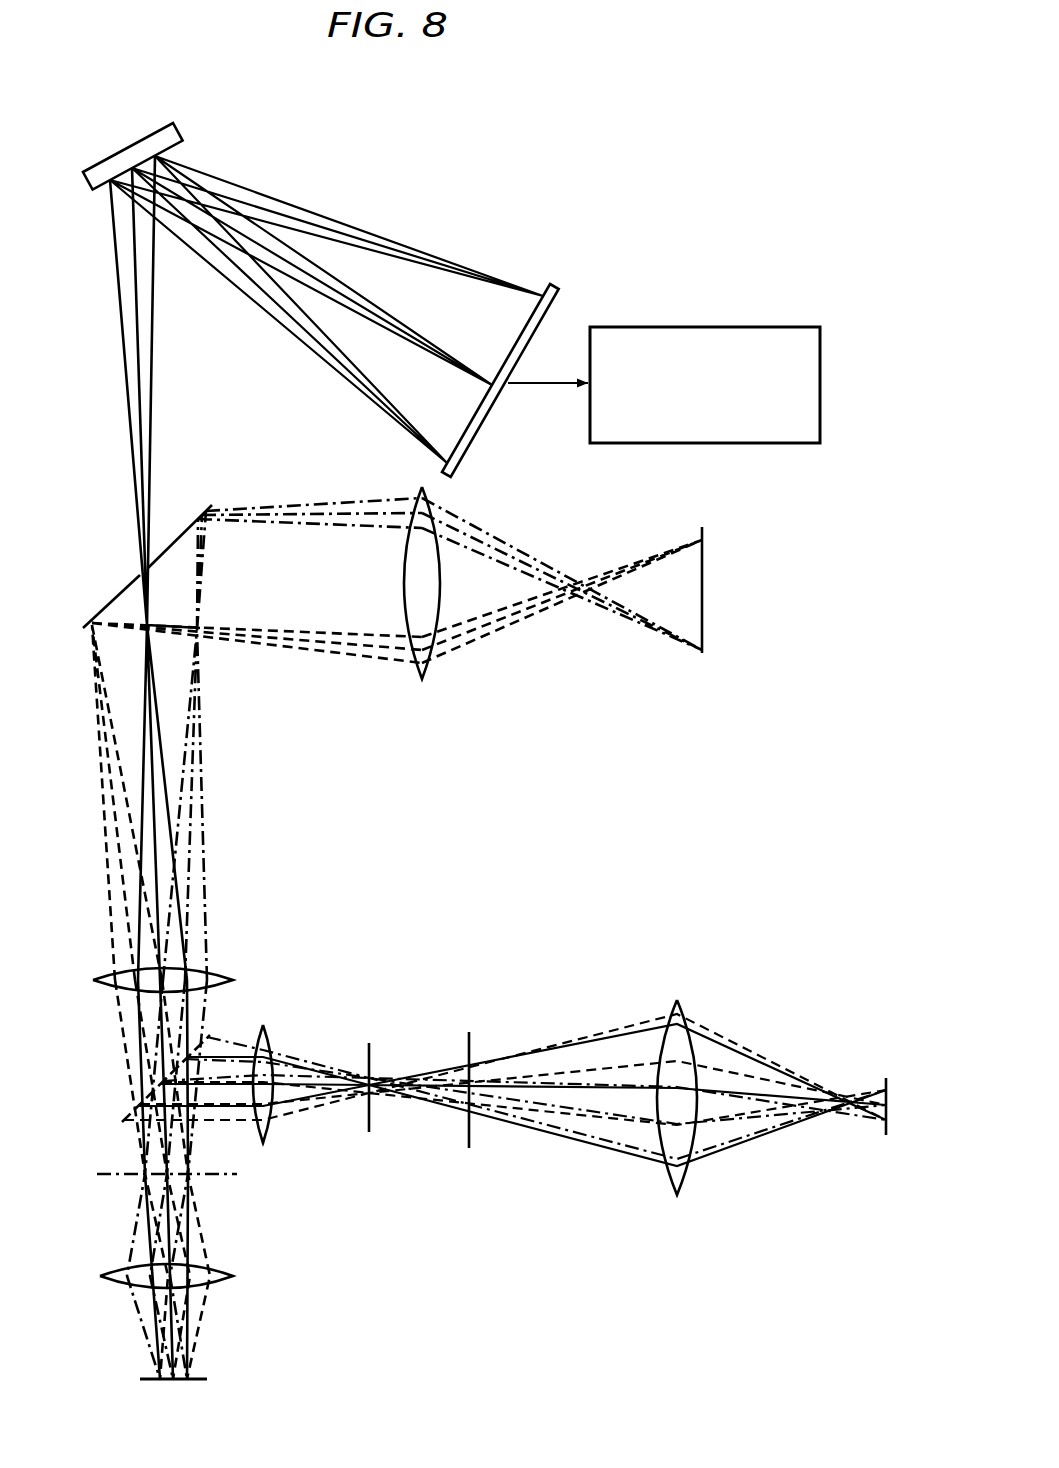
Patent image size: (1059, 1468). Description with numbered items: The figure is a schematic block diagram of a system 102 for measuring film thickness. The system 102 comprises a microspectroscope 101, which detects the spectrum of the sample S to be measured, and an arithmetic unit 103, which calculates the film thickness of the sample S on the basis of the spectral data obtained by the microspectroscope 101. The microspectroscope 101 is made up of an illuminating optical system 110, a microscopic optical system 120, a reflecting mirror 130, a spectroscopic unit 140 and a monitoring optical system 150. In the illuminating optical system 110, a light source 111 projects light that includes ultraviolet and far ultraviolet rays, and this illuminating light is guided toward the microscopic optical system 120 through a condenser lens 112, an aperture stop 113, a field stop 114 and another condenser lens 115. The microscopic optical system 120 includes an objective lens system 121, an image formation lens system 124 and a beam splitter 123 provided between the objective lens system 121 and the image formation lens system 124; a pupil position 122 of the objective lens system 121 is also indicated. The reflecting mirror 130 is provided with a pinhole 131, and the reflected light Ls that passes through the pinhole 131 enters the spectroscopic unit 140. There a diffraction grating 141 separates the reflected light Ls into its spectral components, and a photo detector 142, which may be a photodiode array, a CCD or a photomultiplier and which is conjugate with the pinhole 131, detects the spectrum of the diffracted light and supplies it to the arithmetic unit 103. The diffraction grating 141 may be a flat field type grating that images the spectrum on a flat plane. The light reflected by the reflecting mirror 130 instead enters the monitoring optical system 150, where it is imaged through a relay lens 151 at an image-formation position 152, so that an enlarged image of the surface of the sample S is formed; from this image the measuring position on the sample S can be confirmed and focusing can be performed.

The microspectroscope 101 is at (86, 160).
The system for measuring film thickness 102 is at (745, 172).
The arithmetic unit 103 is at (657, 327).
The illuminating optical system 110 is at (608, 946).
The light source 111 is at (886, 1080).
The condenser lens 112 is at (679, 1004).
The aperture stop 113 is at (470, 1035).
The field stop 114 is at (370, 1046).
The condenser lens 115 is at (264, 1030).
The microscopic optical system 120 is at (295, 1249).
The objective lens system 121 is at (232, 1282).
The pupil position 122 is at (192, 1176).
The beam splitter 123 is at (214, 1037).
The image formation lens system 124 is at (108, 969).
The reflecting mirror 130 is at (197, 510).
The pinhole 131 is at (137, 572).
The spectroscopic unit 140 is at (380, 192).
The diffraction grating 141 is at (178, 131).
The photo detector 142 is at (549, 285).
The monitoring optical system 150 is at (571, 627).
The relay lens 151 is at (425, 676).
The image-formation position 152 is at (714, 622).
The sample S is at (214, 1372).
The reflected light Ls is at (148, 394).